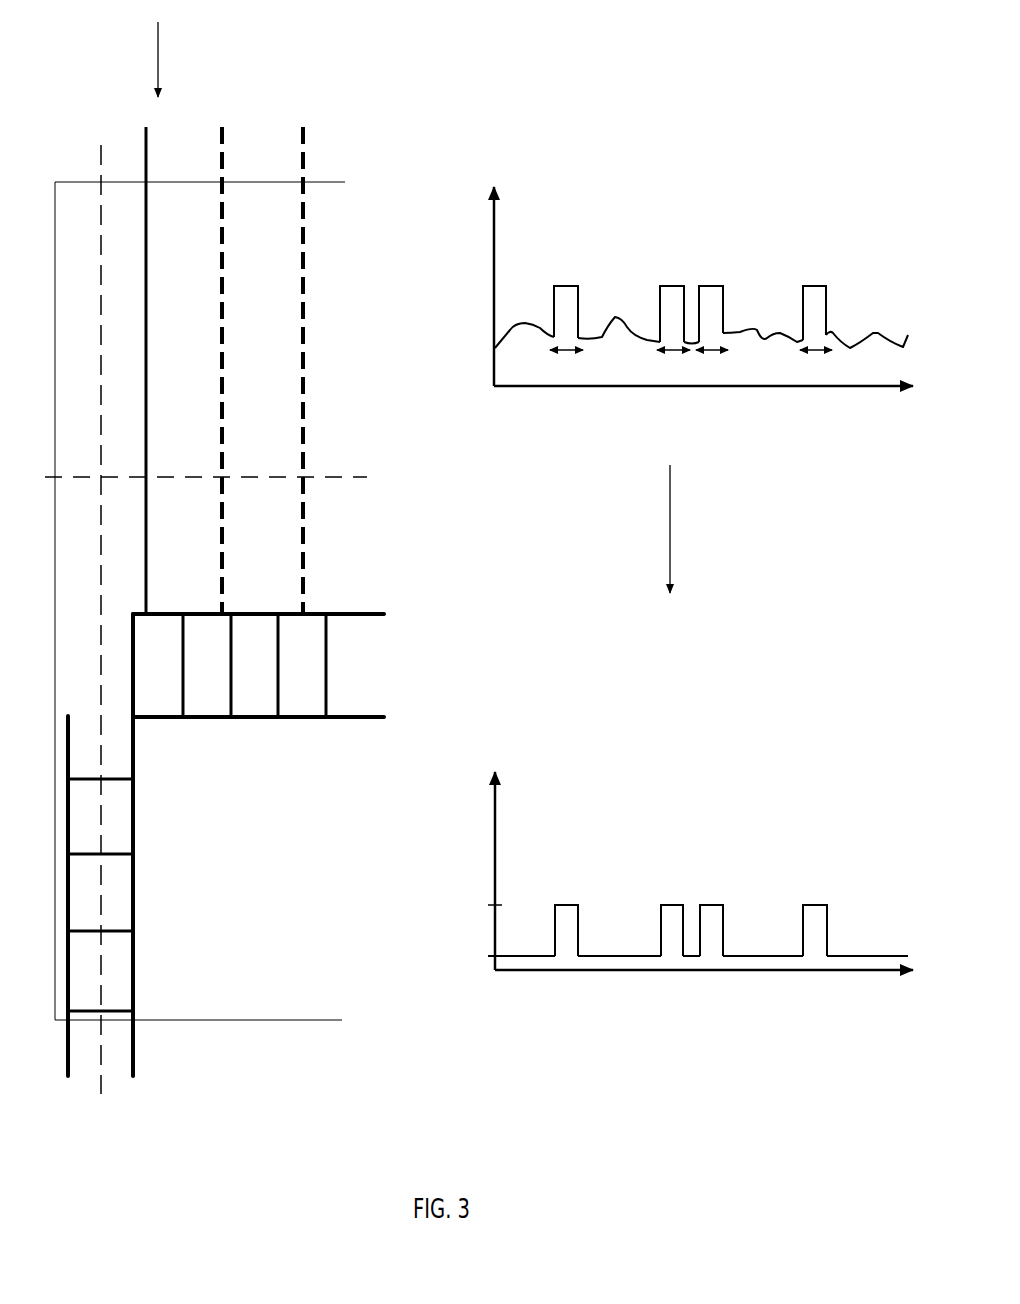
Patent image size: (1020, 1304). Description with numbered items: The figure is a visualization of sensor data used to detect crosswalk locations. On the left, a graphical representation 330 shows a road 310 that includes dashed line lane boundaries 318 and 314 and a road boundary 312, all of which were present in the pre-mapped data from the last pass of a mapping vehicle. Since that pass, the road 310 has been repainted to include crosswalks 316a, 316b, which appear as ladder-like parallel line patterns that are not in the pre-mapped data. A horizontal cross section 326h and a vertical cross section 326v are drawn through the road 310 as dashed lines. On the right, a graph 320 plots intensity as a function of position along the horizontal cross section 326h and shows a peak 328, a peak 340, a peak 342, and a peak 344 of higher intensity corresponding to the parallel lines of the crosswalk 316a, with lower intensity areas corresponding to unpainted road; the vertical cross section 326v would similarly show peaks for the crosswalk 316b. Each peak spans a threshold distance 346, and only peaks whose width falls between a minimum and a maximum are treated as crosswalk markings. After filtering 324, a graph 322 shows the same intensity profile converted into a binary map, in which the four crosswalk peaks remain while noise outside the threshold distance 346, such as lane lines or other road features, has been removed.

The road 310 is at (46, 393).
The road boundary 312 is at (141, 296).
The dashed line lane boundary 314 is at (308, 295).
The crosswalk 316a is at (258, 722).
The crosswalk 316b is at (138, 833).
The dashed line lane boundary 318 is at (229, 395).
The graph 320 is at (700, 536).
The graph 322 is at (851, 751).
The filtering 324 is at (669, 563).
The horizontal cross section 326h is at (387, 478).
The vertical cross section 326v is at (104, 508).
The peak 328 is at (566, 250).
The graphical representation 330 is at (158, 48).
The peak 340 is at (670, 250).
The peak 342 is at (710, 250).
The peak 344 is at (812, 250).
The threshold distance 346 is at (691, 364).